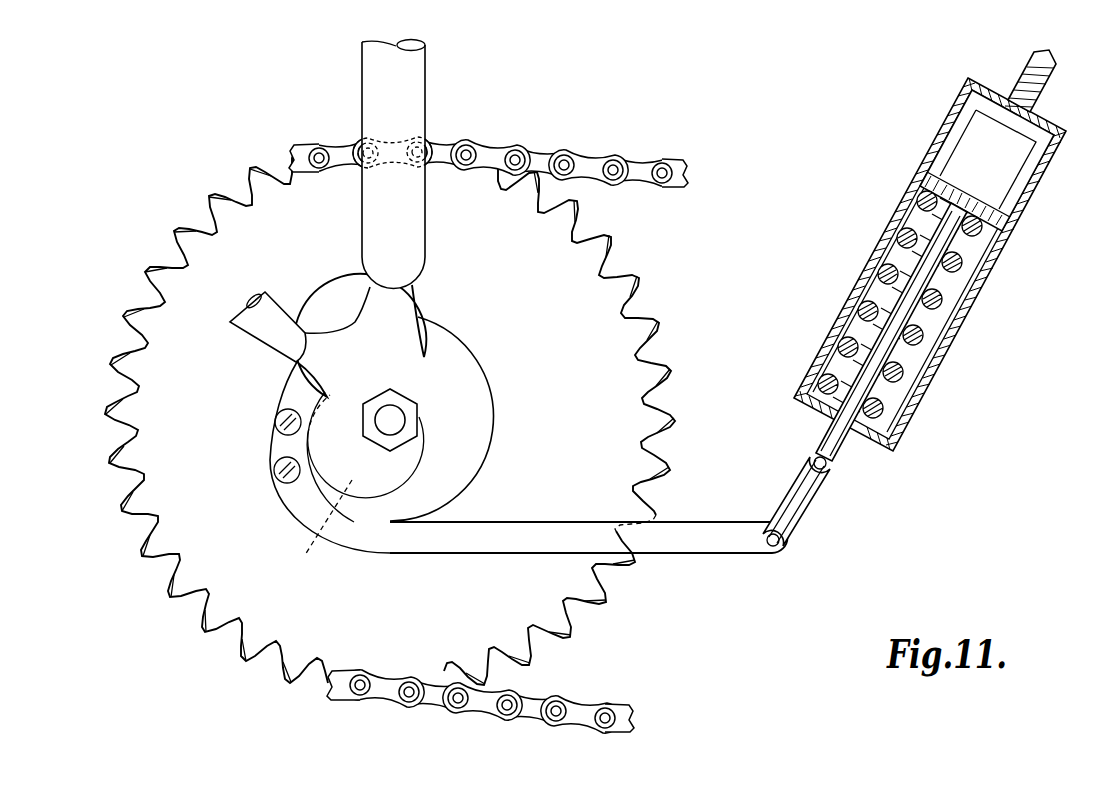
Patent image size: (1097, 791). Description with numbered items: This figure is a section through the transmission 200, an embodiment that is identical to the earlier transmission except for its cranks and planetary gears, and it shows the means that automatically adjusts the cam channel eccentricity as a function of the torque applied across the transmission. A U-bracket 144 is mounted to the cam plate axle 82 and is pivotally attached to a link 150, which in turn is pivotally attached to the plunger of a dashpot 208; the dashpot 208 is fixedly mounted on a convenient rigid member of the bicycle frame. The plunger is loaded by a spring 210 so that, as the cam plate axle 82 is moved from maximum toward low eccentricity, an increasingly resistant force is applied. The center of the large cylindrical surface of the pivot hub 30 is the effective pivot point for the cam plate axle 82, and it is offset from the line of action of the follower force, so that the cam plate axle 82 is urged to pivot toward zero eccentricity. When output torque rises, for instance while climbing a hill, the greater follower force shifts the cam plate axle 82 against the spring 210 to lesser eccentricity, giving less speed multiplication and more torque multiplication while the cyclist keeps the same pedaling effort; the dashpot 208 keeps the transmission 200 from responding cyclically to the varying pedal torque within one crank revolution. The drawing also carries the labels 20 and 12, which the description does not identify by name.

The transmission 200 is at (248, 164).
The tubular member 20 is at (362, 84).
The axle nut 12 is at (397, 408).
The cam plate axle 82 is at (285, 388).
The pivot hub 30 is at (353, 479).
The U-bracket 144 is at (405, 540).
The link 150 is at (800, 500).
The dashpot 208 is at (968, 318).
The spring 210 is at (882, 408).